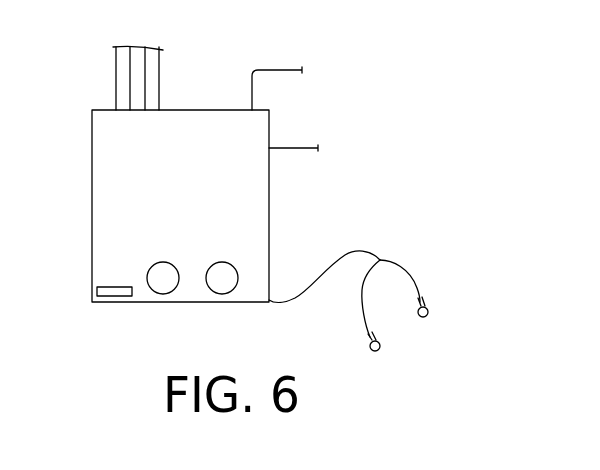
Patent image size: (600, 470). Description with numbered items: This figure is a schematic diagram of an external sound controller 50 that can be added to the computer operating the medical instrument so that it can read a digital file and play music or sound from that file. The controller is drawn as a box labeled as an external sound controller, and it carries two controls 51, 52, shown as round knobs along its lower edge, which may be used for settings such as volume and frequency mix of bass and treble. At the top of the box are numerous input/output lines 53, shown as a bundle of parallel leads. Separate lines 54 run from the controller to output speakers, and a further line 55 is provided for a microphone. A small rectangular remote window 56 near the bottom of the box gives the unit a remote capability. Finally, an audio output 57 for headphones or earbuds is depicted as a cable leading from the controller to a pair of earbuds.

The external sound controller 50 is at (92, 245).
The control 51 is at (163, 295).
The control 52 is at (222, 295).
The input/output lines 53 is at (160, 77).
The output speaker lines 54 is at (253, 86).
The microphone line 55 is at (293, 149).
The remote window 56 is at (103, 297).
The audio output 57 is at (368, 250).